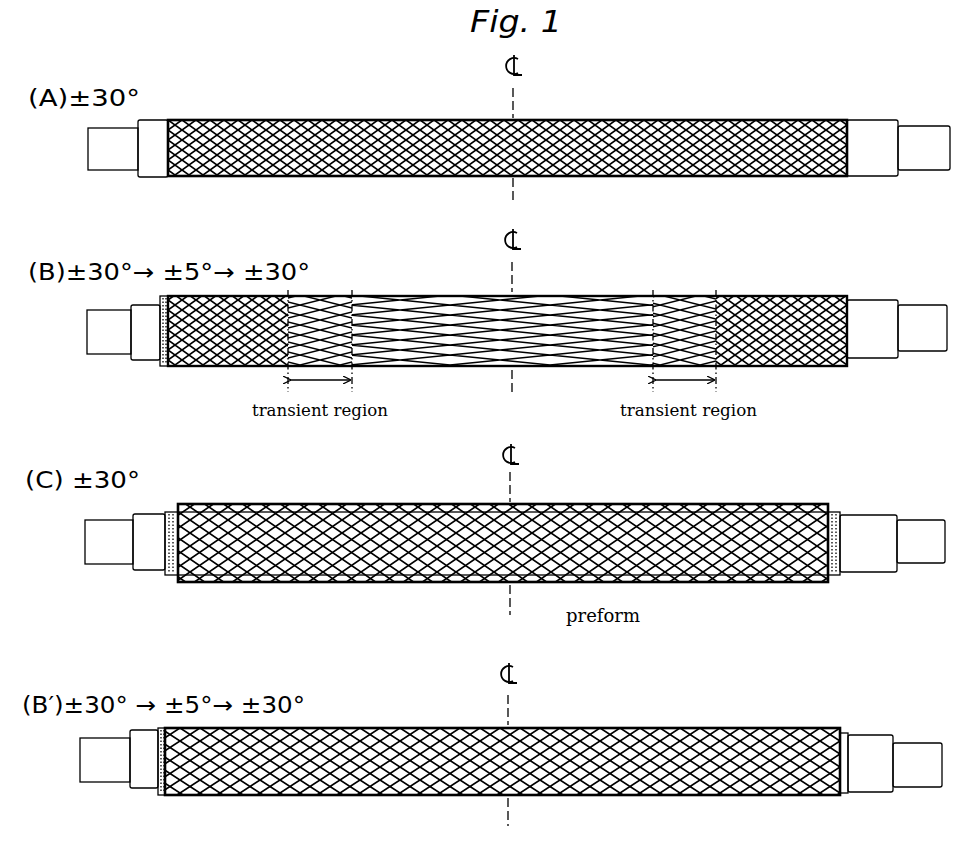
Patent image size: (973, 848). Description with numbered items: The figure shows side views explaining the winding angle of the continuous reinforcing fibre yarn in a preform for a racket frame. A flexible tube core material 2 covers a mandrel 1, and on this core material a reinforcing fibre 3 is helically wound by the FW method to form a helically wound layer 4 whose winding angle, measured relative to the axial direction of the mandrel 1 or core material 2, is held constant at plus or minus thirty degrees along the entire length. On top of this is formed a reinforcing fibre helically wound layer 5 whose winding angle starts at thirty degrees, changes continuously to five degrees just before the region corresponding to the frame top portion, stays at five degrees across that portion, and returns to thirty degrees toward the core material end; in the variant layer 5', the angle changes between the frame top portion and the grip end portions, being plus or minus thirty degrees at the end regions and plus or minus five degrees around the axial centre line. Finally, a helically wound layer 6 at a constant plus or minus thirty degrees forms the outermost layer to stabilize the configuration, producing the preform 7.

The mandrel 1 is at (108, 160).
The flexible tube core material 2 is at (154, 170).
The reinforcing fibre 3 is at (334, 121).
The helically wound layer 4 is at (598, 121).
The reinforcing fibre helically wound layer 5 is at (503, 307).
The compacted braided layer with variable braid angle 5' is at (499, 742).
The helically wound layer 6 is at (597, 505).
The preform 7 is at (518, 586).